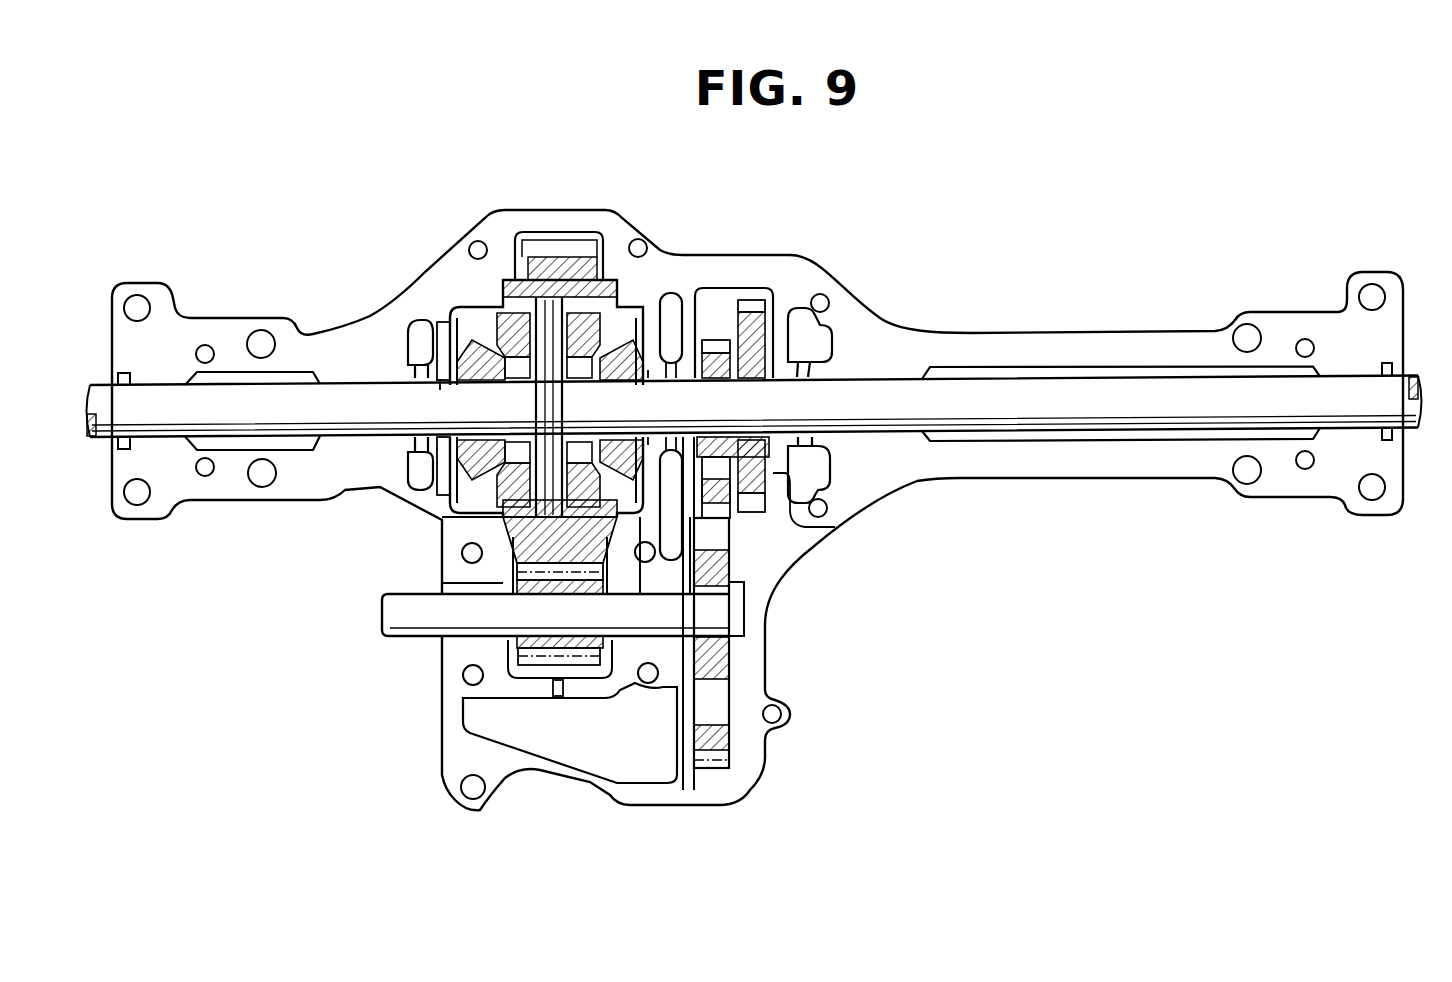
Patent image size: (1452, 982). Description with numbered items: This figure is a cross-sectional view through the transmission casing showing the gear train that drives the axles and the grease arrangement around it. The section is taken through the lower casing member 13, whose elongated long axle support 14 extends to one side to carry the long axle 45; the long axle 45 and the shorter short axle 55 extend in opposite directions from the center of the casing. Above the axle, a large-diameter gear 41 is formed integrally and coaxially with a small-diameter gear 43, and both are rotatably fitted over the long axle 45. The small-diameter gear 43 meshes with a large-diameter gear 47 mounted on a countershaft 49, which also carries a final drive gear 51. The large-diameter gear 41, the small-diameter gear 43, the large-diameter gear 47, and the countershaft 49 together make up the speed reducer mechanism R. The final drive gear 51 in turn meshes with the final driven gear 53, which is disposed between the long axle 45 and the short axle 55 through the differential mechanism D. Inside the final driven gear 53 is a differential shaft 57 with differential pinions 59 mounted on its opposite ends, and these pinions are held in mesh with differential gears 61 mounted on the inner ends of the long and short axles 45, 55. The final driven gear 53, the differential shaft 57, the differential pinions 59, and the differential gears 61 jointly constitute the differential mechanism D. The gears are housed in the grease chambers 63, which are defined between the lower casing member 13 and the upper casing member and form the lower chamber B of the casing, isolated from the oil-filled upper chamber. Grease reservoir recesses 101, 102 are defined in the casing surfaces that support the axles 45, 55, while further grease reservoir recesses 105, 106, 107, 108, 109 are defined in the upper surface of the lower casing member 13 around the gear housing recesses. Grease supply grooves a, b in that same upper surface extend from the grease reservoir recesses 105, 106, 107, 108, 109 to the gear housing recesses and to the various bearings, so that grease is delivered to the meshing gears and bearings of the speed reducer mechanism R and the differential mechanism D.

The lower casing member 13 is at (873, 350).
The long axle support 14 is at (1183, 467).
The large-diameter gear 41 is at (745, 305).
The small-diameter gear 43 is at (721, 345).
The long axle 45 is at (1097, 393).
The large-diameter gear 47 is at (711, 765).
The countershaft 49 is at (405, 628).
The final drive gear 51 is at (580, 668).
The final driven gear 53 is at (555, 243).
The short axle 55 is at (228, 400).
The differential shaft 57 is at (542, 320).
The differential pinions 59 is at (606, 290).
The differential gears 61 is at (441, 328).
The grease chambers 63 is at (590, 262).
The grease reservoir recess 101 is at (235, 447).
The grease reservoir recess 102 is at (1060, 440).
The grease reservoir recess 105 is at (637, 770).
The grease reservoir recess 106 is at (760, 573).
The grease reservoir recess 107 is at (670, 295).
The grease reservoir recess 108 is at (823, 340).
The grease reservoir recess 109 is at (410, 332).
The grease supply groove a is at (410, 372).
The grease supply groove b is at (438, 386).
The lower chamber B is at (757, 288).
The differential mechanism D is at (438, 222).
The speed reducer mechanism R is at (798, 623).